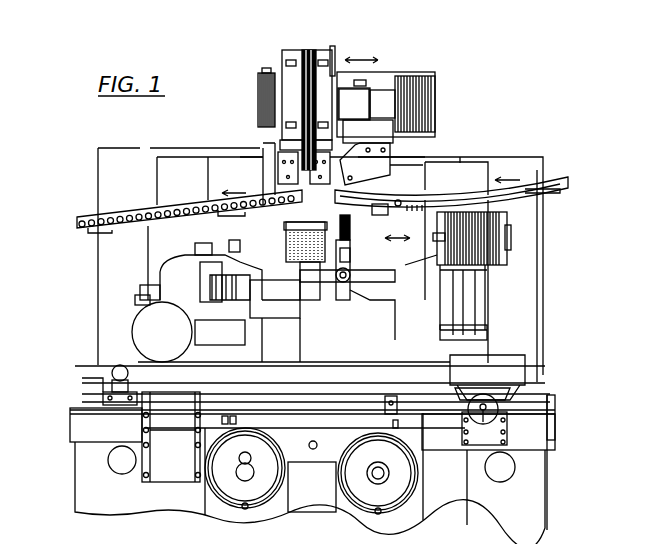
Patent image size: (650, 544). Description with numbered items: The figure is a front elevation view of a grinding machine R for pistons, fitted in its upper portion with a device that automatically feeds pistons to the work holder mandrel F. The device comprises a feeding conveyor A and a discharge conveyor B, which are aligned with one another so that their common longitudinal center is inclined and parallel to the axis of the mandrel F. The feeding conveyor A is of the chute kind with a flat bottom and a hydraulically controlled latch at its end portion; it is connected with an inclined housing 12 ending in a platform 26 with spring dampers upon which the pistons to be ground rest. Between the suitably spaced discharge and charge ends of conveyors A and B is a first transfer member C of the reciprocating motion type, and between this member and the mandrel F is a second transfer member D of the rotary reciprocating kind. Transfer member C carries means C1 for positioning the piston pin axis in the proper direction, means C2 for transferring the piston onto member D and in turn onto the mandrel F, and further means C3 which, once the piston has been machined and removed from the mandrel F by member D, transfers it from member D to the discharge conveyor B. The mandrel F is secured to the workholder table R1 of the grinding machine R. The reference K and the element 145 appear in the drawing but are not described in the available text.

The feeding conveyor A is at (522, 194).
The discharge conveyor B is at (94, 217).
The first transfer member C is at (249, 64).
The positioning means C1 is at (389, 82).
The transferring means C2 is at (341, 52).
The further transfer means C3 is at (303, 48).
The second transfer member D is at (353, 272).
The workholder mandrel F is at (142, 300).
The control wheel K is at (562, 390).
The grinding machine R is at (67, 466).
The workholder table R1 is at (108, 375).
The housing 12 is at (459, 195).
The platform 26 is at (337, 197).
The headstock housing 145 is at (180, 272).